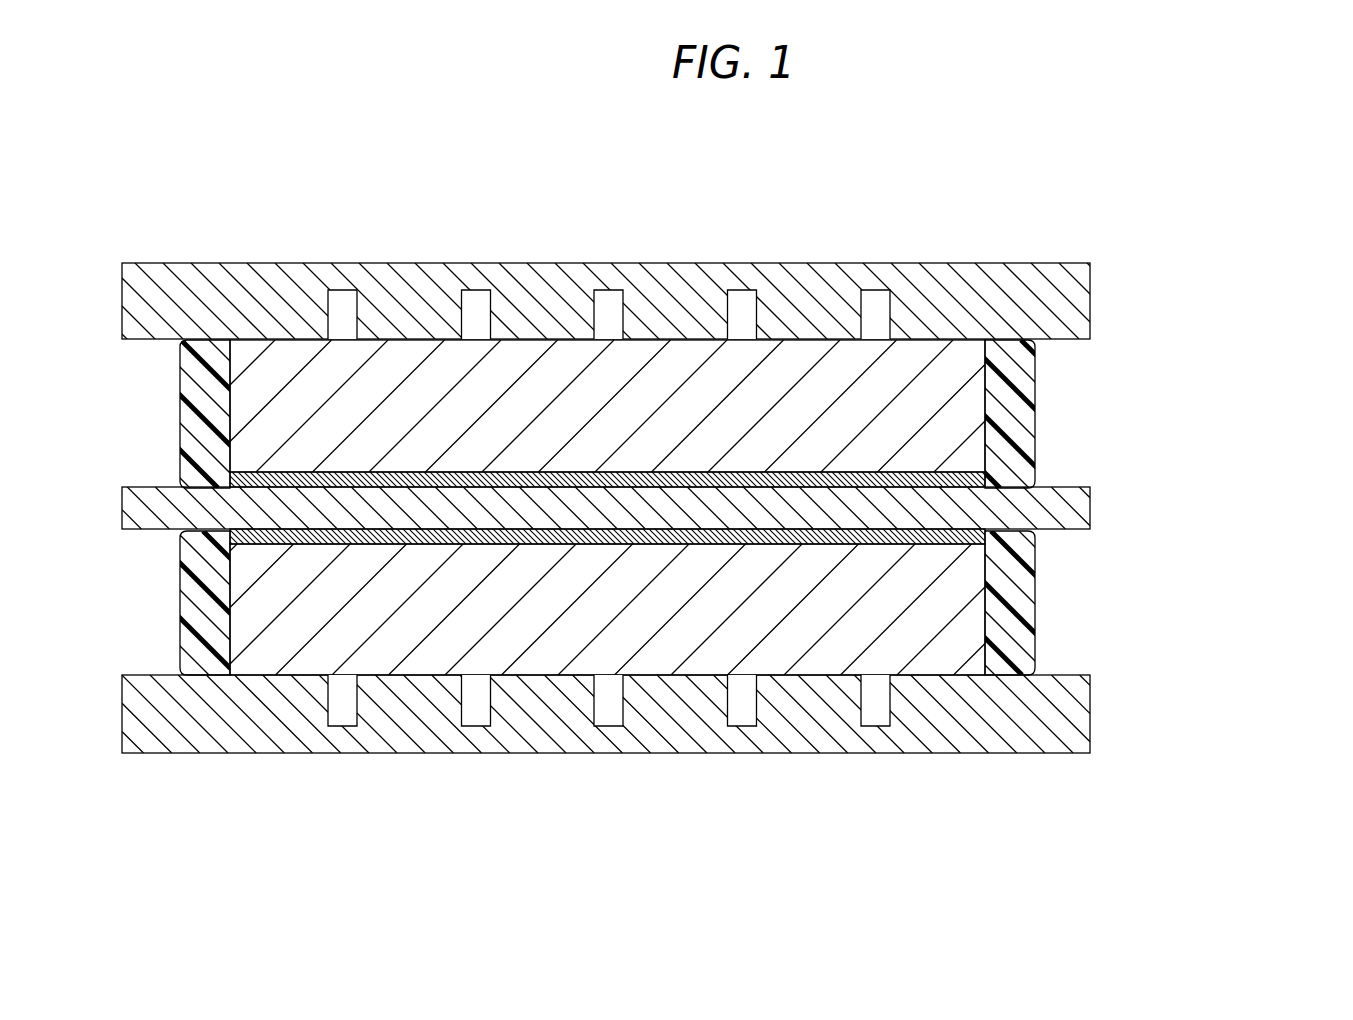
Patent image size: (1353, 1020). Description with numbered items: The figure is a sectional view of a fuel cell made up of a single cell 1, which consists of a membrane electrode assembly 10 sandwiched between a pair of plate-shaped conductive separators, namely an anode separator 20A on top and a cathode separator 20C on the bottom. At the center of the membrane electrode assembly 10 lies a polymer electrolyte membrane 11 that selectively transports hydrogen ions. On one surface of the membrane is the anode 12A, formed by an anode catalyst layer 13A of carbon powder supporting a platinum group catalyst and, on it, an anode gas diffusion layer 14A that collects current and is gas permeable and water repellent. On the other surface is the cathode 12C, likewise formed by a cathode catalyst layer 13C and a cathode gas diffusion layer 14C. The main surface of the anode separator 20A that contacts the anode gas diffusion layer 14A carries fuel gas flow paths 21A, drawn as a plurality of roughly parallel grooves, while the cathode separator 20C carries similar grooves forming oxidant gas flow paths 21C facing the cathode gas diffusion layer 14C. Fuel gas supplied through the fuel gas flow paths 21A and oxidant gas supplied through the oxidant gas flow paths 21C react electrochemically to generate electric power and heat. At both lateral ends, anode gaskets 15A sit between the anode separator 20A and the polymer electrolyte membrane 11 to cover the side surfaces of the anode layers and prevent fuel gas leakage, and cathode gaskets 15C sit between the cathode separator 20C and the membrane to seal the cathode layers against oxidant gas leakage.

The cell 1 is at (697, 510).
The membrane electrode assembly 10 is at (712, 507).
The polymer electrolyte membrane 11 is at (1078, 507).
The anode 12A is at (738, 413).
The cathode 12C is at (738, 601).
The anode catalyst layer 13A is at (985, 478).
The cathode catalyst layer 13C is at (985, 535).
The anode gas diffusion layer 14A is at (965, 430).
The cathode gas diffusion layer 14C is at (965, 588).
The anode gasket 15A is at (202, 383).
The cathode gasket 15C is at (202, 602).
The anode separator 20A is at (1078, 297).
The cathode separator 20C is at (1078, 700).
The fuel gas flow paths 21A is at (343, 303).
The oxidant gas flow paths 21C is at (343, 720).